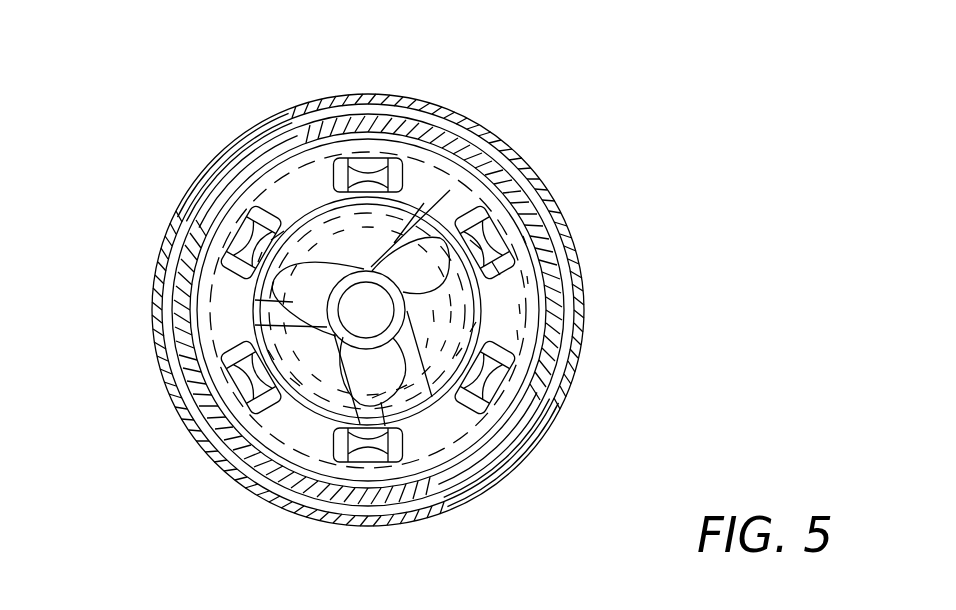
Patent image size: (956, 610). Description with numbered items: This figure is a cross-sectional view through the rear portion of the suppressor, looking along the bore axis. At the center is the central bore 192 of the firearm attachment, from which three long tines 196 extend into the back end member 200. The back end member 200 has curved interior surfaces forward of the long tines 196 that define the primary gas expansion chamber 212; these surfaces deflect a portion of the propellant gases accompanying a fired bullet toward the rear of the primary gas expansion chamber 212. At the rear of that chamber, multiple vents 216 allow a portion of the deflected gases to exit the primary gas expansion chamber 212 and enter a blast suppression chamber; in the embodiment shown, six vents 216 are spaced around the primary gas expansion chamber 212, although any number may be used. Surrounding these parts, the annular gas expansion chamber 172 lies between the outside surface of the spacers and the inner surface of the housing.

The annular gas expansion chamber 172 is at (153, 318).
The central bore 192 is at (380, 308).
The long tines 196 is at (380, 225).
The back end member 200 is at (337, 492).
The primary gas expansion chamber 212 is at (282, 198).
The vents 216 is at (369, 160).